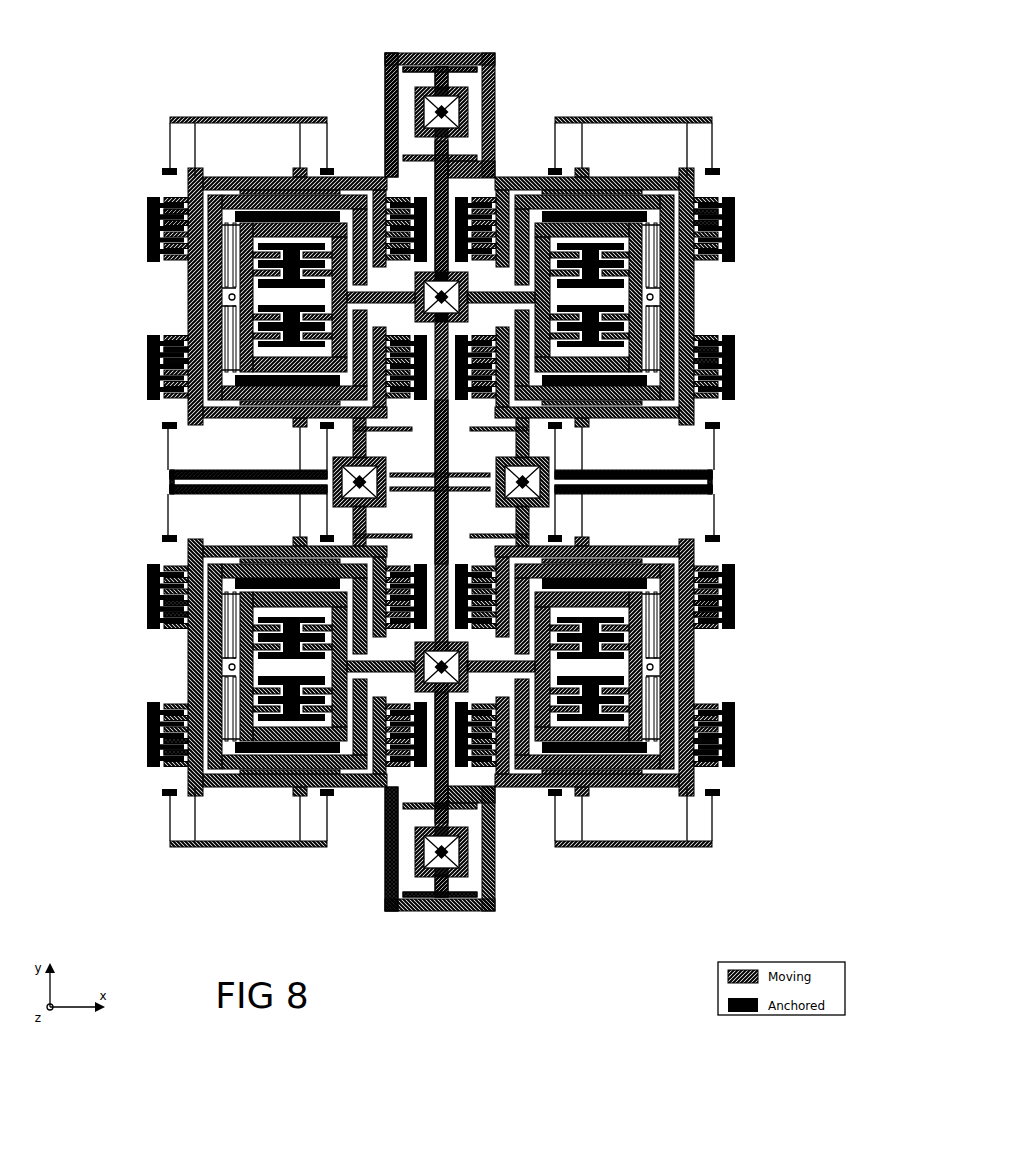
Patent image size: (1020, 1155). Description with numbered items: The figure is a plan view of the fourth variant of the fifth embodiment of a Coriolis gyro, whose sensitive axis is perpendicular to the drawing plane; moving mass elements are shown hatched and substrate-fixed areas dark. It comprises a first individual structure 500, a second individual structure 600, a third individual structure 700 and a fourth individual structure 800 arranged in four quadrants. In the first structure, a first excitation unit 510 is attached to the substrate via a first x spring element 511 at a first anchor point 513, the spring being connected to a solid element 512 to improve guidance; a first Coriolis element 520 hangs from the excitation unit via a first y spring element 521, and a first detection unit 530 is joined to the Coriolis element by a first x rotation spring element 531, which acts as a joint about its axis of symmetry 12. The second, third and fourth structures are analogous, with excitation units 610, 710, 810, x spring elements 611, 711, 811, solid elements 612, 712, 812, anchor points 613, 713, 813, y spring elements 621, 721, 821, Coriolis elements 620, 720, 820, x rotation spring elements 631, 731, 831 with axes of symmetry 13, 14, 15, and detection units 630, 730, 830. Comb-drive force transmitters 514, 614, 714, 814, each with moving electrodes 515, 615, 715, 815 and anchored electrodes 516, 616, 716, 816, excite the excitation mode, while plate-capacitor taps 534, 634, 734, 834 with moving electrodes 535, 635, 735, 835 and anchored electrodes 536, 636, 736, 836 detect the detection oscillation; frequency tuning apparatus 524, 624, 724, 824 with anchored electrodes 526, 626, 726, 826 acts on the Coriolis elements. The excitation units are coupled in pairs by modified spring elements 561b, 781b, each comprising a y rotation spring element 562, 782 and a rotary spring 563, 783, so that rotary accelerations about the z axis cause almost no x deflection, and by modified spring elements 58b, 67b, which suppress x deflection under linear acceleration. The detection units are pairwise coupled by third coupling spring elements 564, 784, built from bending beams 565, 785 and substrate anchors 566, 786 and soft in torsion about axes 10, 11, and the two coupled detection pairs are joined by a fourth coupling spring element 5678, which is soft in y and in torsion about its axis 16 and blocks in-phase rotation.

The axis of symmetry 10 is at (492, 70).
The axis of symmetry 11 is at (492, 894).
The axis of symmetry 12 is at (230, 296).
The axis of symmetry 13 is at (652, 296).
The axis of symmetry 14 is at (652, 668).
The axis of symmetry 15 is at (230, 668).
The axis of symmetry 16 is at (450, 476).
The first individual structure 500 is at (150, 155).
The first excitation unit 510 is at (166, 166).
The first Coriolis element 520 is at (207, 194).
The first detection unit 530 is at (236, 212).
The first y spring element 521 is at (262, 190).
The apparatus for frequency tuning 524 is at (299, 166).
The electrode anchored on the substrate 526 is at (326, 166).
The first x rotation spring element 531 is at (148, 208).
The first tap 534 is at (148, 236).
The first moving electrode 535 is at (150, 254).
The first electrode anchored on the substrate 536 is at (228, 280).
The first force transmitter 514 is at (148, 342).
The moving electrode 515 is at (148, 358).
The electrode anchored on the substrate 516 is at (148, 376).
The first anchor point 513 is at (165, 422).
The first x spring element 511 is at (172, 470).
The solid element 512 is at (200, 486).
The second individual structure 600 is at (732, 155).
The second excitation unit 610 is at (716, 166).
The second Coriolis element 620 is at (675, 194).
The second detection unit 630 is at (646, 212).
The second y spring element 621 is at (620, 190).
The apparatus for frequency tuning 624 is at (583, 166).
The electrode anchored on the substrate 626 is at (556, 166).
The second x rotation spring element 631 is at (734, 208).
The second tap 634 is at (734, 236).
The second moving electrode 635 is at (732, 254).
The second electrode anchored on the substrate 636 is at (654, 280).
The second force transmitter 614 is at (734, 342).
The moving electrode 615 is at (734, 358).
The electrode anchored on the substrate 616 is at (734, 376).
The second anchor point 613 is at (717, 422).
The second x spring element 611 is at (710, 470).
The solid element 612 is at (682, 486).
The third individual structure 700 is at (732, 809).
The third excitation unit 710 is at (716, 798).
The third Coriolis element 720 is at (675, 770).
The third detection unit 730 is at (646, 752).
The third y spring element 721 is at (620, 774).
The apparatus for frequency tuning 724 is at (583, 798).
The electrode anchored on the substrate 726 is at (556, 798).
The third x rotation spring element 731 is at (734, 756).
The third tap 734 is at (734, 728).
The third moving electrode 735 is at (732, 710).
The third electrode anchored on the substrate 736 is at (654, 684).
The third force transmitter 714 is at (734, 622).
The moving electrode 715 is at (734, 606).
The electrode anchored on the substrate 716 is at (734, 588).
The third anchor point 713 is at (717, 542).
The third x spring element 711 is at (710, 494).
The solid element 712 is at (682, 478).
The fourth individual structure 800 is at (150, 809).
The fourth excitation unit 810 is at (166, 798).
The fourth Coriolis element 820 is at (207, 770).
The fourth detection unit 830 is at (236, 752).
The fourth y spring element 821 is at (262, 774).
The apparatus for frequency tuning 824 is at (299, 798).
The electrode anchored on the substrate 826 is at (326, 798).
The fourth x rotation spring element 831 is at (148, 756).
The fourth tap 834 is at (148, 728).
The fourth moving electrode 835 is at (150, 710).
The fourth electrode anchored on the substrate 836 is at (228, 684).
The fourth force transmitter 814 is at (148, 622).
The moving electrode 815 is at (148, 606).
The electrode anchored on the substrate 816 is at (148, 588).
The fourth anchor point 813 is at (165, 542).
The fourth x spring element 811 is at (172, 494).
The solid element 812 is at (200, 478).
The modified first coupling spring element 561b is at (390, 80).
The y rotation spring element 562 is at (418, 70).
The rotary spring 563 is at (436, 80).
The third coupling spring element 564 is at (442, 98).
The bending beam 565 is at (438, 262).
The anchor on the substrate 566 is at (447, 262).
The modified first coupling spring element 781b is at (390, 884).
The y rotation spring element 782 is at (418, 894).
The rotary spring 783 is at (436, 884).
The third coupling spring element 784 is at (442, 866).
The bending beam 785 is at (438, 702).
The anchor on the substrate 786 is at (447, 702).
The fourth coupling spring element 5678 is at (433, 473).
The modified second coupling spring element 58b is at (357, 534).
The modified second coupling spring element 67b is at (525, 534).